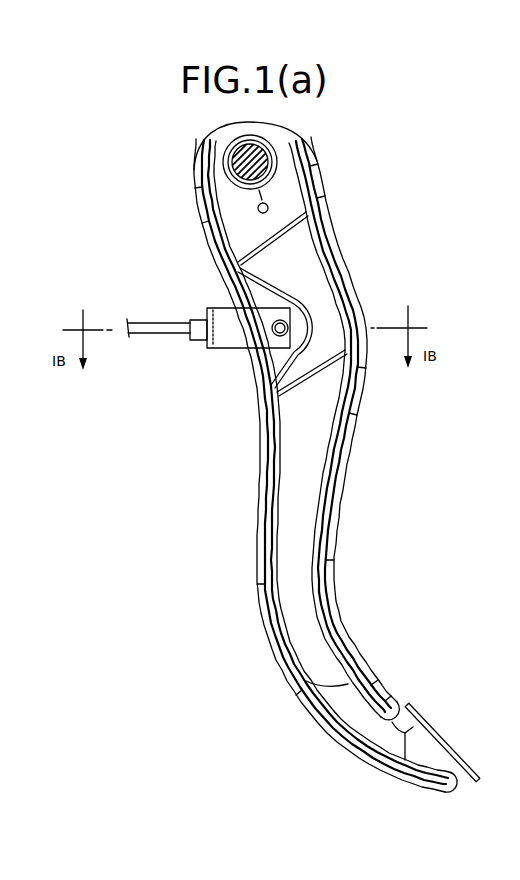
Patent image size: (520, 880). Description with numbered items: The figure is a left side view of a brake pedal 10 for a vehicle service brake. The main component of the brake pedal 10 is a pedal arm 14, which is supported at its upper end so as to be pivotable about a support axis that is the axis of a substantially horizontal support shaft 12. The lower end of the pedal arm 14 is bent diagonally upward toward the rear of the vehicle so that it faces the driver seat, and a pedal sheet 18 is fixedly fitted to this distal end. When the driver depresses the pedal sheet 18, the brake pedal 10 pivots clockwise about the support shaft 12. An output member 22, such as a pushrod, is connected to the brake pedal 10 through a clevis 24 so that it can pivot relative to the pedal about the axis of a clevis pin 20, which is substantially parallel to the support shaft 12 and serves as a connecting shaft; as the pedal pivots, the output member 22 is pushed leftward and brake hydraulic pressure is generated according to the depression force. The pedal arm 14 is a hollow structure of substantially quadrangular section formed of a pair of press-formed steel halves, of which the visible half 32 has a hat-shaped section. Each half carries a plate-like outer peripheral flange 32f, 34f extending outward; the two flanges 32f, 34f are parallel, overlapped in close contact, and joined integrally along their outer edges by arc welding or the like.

The brake pedal 10 is at (412, 213).
The support shaft 12 is at (258, 152).
The pedal arm 14 is at (224, 705).
The pedal sheet 18 is at (443, 742).
The clevis pin 20 is at (278, 337).
The output member 22 is at (152, 336).
The clevis 24 is at (226, 320).
The half 32 is at (321, 464).
The outer peripheral flange 32f is at (258, 563).
The outer peripheral flange 34f is at (373, 528).